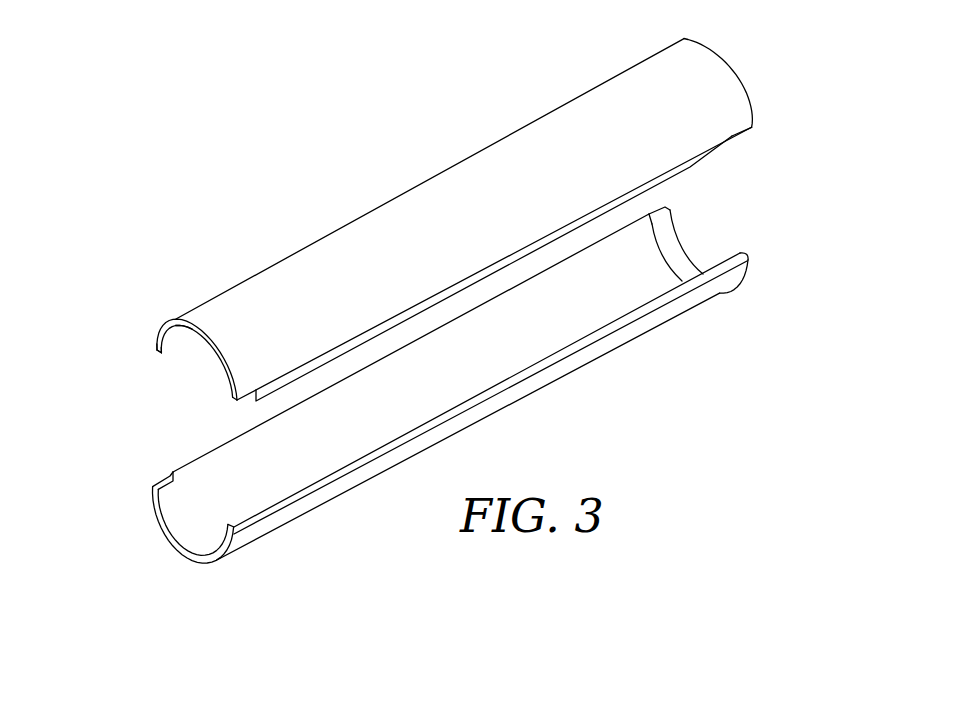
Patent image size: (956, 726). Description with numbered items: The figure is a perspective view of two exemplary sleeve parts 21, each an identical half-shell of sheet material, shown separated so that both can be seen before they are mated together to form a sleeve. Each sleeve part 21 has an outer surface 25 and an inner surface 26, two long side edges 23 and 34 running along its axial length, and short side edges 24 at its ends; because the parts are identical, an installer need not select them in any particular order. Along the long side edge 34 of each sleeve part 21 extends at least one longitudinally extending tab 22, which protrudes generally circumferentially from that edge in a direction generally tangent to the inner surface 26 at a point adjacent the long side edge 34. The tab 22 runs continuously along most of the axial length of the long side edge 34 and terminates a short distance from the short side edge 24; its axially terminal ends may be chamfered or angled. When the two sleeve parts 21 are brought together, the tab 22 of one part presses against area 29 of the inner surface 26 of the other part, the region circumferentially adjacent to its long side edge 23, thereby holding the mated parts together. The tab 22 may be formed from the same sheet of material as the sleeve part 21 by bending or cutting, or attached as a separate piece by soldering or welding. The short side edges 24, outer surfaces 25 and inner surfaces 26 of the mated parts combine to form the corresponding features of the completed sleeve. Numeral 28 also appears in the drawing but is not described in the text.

The sleeve part 21 is at (644, 68).
The tab 22 is at (733, 140).
The long side edge 23 is at (183, 351).
The short side edge 24 is at (157, 344).
The outer surface 25 is at (455, 166).
The inner surface 26 is at (278, 483).
The rim lip 28 is at (692, 163).
The area 29 is at (181, 331).
The long side edge 34 is at (751, 130).